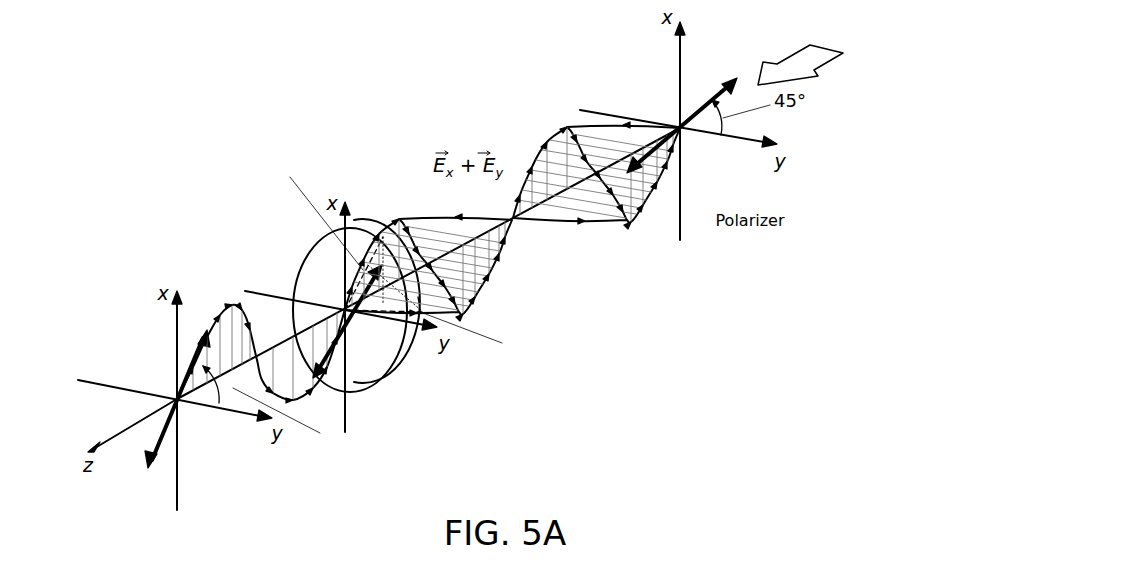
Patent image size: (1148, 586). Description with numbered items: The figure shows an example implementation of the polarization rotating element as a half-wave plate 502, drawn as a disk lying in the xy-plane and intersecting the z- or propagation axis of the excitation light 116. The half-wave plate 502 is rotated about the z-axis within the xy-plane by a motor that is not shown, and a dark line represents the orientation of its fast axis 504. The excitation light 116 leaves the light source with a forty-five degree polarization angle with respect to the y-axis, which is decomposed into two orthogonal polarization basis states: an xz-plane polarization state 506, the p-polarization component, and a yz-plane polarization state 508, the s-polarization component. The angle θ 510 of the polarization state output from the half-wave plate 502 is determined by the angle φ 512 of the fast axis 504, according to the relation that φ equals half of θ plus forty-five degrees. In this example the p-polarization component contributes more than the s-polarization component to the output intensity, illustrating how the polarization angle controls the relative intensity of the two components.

The excitation light 116 is at (828, 55).
The half-wave plate 502 is at (375, 392).
The fast axis 504 is at (364, 262).
The xz-plane polarization state 506 is at (557, 125).
The yz-plane polarization state 508 is at (605, 222).
The angle θ 510 is at (325, 447).
The angle φ 512 is at (518, 353).